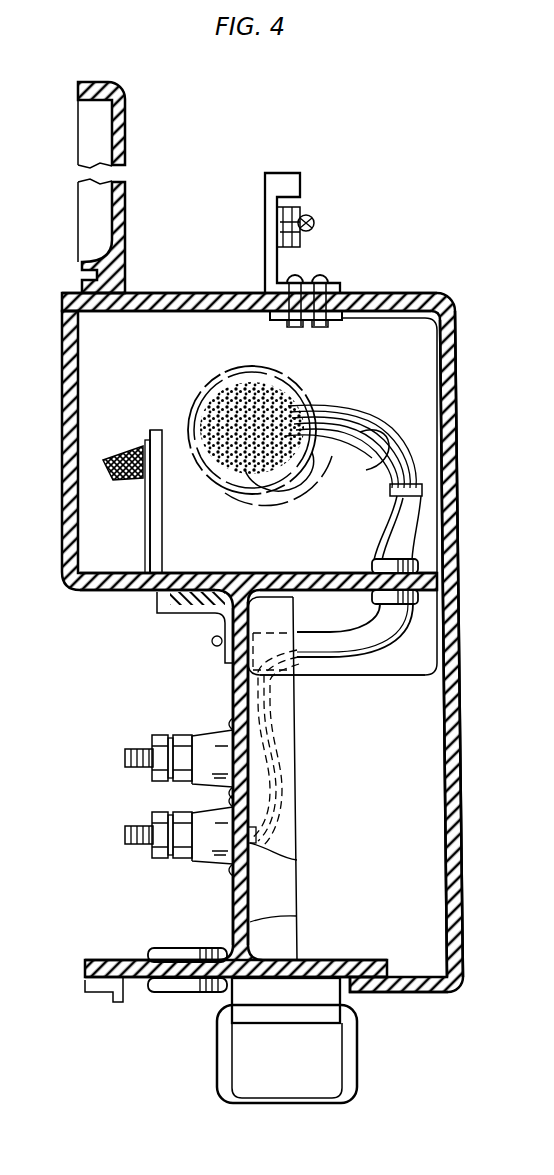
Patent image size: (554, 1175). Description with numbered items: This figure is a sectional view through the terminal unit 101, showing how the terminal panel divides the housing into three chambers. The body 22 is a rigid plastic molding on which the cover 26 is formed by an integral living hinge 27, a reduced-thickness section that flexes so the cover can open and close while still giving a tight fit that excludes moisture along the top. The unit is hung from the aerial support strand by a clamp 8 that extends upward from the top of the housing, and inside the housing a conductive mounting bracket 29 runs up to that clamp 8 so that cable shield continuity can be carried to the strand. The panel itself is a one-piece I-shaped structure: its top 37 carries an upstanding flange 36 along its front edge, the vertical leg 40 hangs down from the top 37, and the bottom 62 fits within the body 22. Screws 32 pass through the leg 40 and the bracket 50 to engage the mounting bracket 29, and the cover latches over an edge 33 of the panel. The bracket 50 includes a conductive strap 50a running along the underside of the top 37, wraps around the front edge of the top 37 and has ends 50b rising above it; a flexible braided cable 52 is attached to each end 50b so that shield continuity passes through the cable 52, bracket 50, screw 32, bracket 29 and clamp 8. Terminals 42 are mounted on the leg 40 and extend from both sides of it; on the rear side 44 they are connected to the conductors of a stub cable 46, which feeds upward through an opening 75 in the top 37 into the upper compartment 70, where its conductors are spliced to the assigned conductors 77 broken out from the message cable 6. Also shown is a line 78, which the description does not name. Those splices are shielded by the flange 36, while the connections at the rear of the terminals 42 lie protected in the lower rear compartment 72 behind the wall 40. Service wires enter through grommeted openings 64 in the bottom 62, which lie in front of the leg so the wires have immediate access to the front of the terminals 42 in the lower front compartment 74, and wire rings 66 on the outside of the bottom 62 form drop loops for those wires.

The signal carrying cable 6 is at (224, 380).
The clamp 8 is at (287, 182).
The body 22 is at (462, 947).
The cover 26 is at (128, 134).
The integral hinge 27 is at (96, 274).
The conductive mounting bracket 29 is at (386, 678).
The screw 32 is at (216, 643).
The edge of terminal panel 33 is at (135, 990).
The flange 36 is at (68, 462).
The top 37 is at (116, 592).
The vertical leg 40 is at (238, 916).
The terminal 42 is at (298, 860).
The rear side of leg 44 is at (297, 917).
The stub cable 46 is at (362, 627).
The bracket 50 is at (163, 514).
The conductive strap 50a is at (185, 606).
The end of bracket 50b is at (152, 528).
The flexible braided cable 52 is at (131, 456).
The bottom 62 is at (382, 994).
The grommeted opening 64 is at (180, 992).
The wire ring 66 is at (221, 1068).
The upper compartment 70 is at (418, 336).
The lower rear compartment 72 is at (430, 714).
The lower front compartment 74 is at (145, 683).
The opening 75 is at (372, 571).
The assigned conductors 77 is at (382, 412).
The cable 78 is at (299, 807).
The terminal unit 101 is at (352, 298).